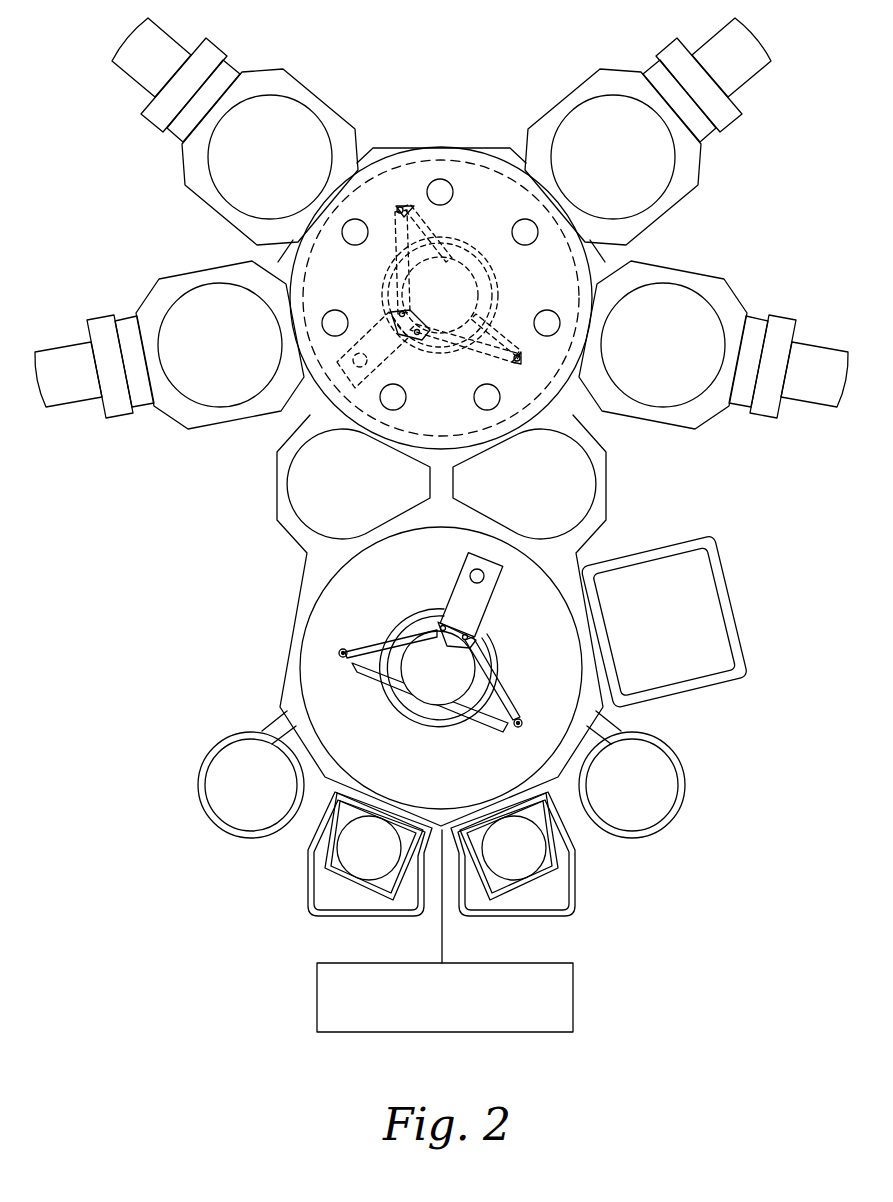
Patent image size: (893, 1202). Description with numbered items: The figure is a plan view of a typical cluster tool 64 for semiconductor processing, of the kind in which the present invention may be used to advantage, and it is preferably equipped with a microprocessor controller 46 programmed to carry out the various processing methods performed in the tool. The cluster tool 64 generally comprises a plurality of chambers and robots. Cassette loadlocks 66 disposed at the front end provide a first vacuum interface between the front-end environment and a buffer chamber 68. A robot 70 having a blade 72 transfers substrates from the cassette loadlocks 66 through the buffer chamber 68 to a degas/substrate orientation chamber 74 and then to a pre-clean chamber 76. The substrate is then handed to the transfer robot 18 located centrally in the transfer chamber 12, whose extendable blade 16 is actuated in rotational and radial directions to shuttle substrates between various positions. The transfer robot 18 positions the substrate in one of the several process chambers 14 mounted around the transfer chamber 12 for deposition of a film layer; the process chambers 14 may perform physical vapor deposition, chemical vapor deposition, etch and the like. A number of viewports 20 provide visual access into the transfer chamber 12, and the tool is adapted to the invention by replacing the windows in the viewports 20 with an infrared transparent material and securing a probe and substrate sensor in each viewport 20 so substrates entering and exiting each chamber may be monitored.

The transfer chamber 12 is at (396, 147).
The process chamber 14 is at (193, 192).
The extendable blade 16 is at (406, 376).
The transfer robot 18 is at (498, 284).
The viewports 20 is at (454, 192).
The microprocessor controller 46 is at (573, 995).
The cluster tool 64 is at (165, 905).
The cassette loadlocks 66 is at (307, 882).
The buffer chamber 68 is at (293, 627).
The robot 70 is at (497, 654).
The blade 72 is at (450, 583).
The degas/substrate orientation chamber 74 is at (198, 782).
The pre-clean chamber 76 is at (738, 598).